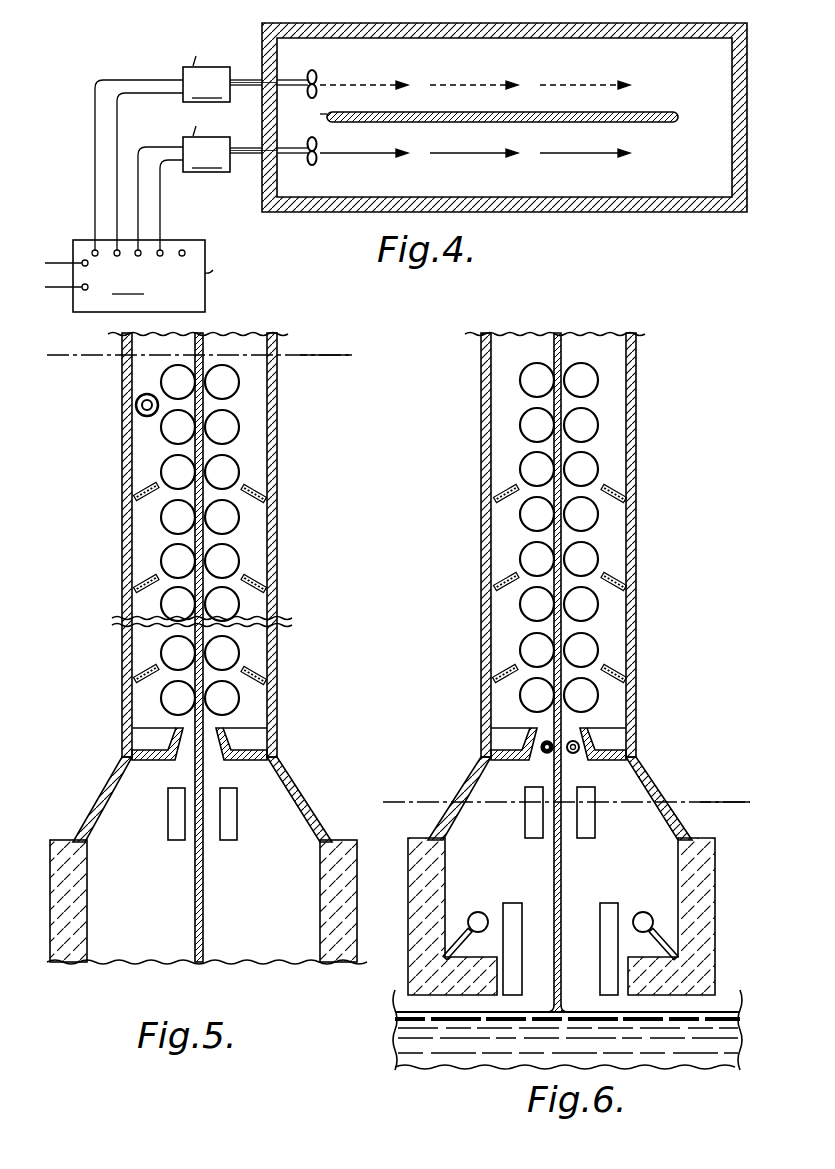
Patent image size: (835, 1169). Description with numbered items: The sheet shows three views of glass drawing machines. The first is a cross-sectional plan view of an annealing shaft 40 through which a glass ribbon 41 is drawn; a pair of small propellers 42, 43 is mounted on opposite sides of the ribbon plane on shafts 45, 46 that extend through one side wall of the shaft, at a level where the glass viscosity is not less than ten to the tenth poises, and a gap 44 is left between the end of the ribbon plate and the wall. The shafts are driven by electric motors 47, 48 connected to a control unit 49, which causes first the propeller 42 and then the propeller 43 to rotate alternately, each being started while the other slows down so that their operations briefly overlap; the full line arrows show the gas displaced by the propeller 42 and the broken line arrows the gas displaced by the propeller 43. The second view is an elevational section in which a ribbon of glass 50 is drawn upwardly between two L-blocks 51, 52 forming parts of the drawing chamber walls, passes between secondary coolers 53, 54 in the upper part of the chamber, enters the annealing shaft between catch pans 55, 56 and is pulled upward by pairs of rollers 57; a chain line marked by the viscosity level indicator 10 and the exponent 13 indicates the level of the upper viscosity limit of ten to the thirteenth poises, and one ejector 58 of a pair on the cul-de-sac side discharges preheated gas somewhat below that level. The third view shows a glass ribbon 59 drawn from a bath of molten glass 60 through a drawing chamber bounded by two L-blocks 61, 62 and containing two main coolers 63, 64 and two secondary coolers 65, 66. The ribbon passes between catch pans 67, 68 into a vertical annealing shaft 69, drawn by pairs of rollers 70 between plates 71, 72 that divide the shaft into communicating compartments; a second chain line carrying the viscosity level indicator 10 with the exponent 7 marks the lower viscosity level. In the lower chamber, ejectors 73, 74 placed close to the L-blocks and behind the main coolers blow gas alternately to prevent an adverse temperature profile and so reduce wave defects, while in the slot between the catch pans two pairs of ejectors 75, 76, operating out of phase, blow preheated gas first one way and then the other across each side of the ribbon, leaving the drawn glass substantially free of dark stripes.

In FIG. 4, the annealing shaft 40 is at (538, 14).
In FIG. 4, the glass ribbon 41 is at (633, 116).
In FIG. 4, the propeller 42 is at (318, 160).
In FIG. 4, the propeller 43 is at (318, 79).
In FIG. 4, the gap 44 is at (326, 114).
In FIG. 4, the shaft 45 is at (247, 157).
In FIG. 4, the shaft 46 is at (245, 80).
In FIG. 4, the electric motor 47 is at (220, 142).
In FIG. 4, the electric motor 48 is at (220, 72).
In FIG. 4, the control unit 49 is at (156, 196).
In FIG. 5, the ribbon of glass 50 is at (205, 888).
In FIG. 5, the L-block 51 is at (68, 922).
In FIG. 5, the L-block 52 is at (337, 920).
In FIG. 5, the secondary cooler 53 is at (168, 810).
In FIG. 5, the secondary cooler 54 is at (228, 810).
In FIG. 5, the catch pan 55 is at (153, 744).
In FIG. 5, the catch pan 56 is at (253, 744).
In FIG. 5, the pairs of rollers 57 is at (225, 557).
In FIG. 5, the ejector 58 is at (136, 404).
In FIG. 6, the glass ribbon 59 is at (565, 862).
In FIG. 6, the bath of molten glass 60 is at (574, 1056).
In FIG. 6, the L-block 61 is at (432, 893).
In FIG. 6, the L-block 62 is at (697, 917).
In FIG. 6, the main cooler 63 is at (508, 915).
In FIG. 6, the main cooler 64 is at (608, 912).
In FIG. 6, the secondary cooler 65 is at (525, 822).
In FIG. 6, the secondary cooler 66 is at (595, 820).
In FIG. 6, the catch pan 67 is at (505, 738).
In FIG. 6, the catch pan 68 is at (613, 740).
In FIG. 6, the vertical annealing shaft 69 is at (650, 620).
In FIG. 6, the pairs of rollers 70 is at (530, 522).
In FIG. 6, the plate 71 is at (507, 485).
In FIG. 6, the plate 72 is at (608, 485).
In FIG. 6, the ejector 73 is at (477, 912).
In FIG. 6, the ejector 74 is at (644, 912).
In FIG. 6, the ejector 75 is at (544, 754).
In FIG. 6, the ejector 76 is at (577, 754).
In FIG. 5, the section line 10 is at (204, 345).
In FIG. 6, the section line 10 is at (566, 792).
In FIG. 5, the section reference 13 is at (342, 336).
In FIG. 6, the section reference 7 is at (725, 785).